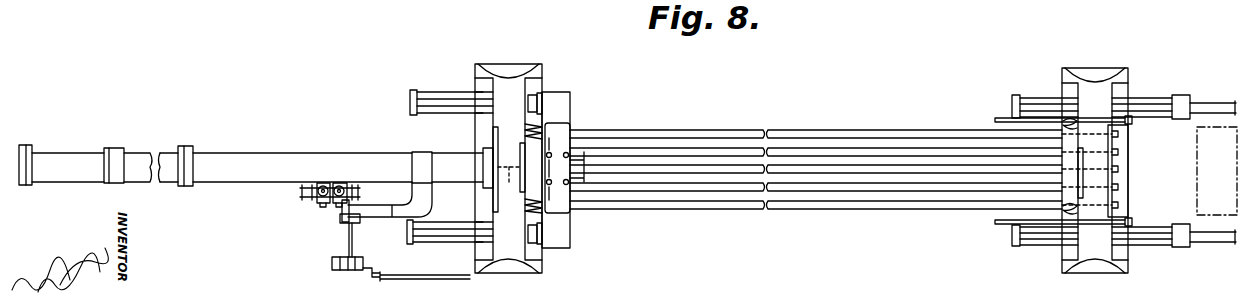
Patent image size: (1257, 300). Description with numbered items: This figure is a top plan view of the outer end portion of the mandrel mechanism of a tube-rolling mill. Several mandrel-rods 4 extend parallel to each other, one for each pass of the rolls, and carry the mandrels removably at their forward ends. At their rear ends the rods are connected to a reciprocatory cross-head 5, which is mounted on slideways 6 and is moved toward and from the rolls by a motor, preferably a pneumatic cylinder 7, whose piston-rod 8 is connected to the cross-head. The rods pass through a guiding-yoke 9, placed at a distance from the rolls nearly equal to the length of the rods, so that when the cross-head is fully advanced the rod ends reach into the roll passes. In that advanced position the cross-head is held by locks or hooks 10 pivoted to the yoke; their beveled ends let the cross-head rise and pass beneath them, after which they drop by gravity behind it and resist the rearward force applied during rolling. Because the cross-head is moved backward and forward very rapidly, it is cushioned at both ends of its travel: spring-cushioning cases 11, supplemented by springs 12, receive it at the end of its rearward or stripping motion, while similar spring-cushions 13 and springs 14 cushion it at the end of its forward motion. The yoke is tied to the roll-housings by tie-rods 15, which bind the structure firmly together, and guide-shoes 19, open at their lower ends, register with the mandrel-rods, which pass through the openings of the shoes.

The mandrel-rods 4 is at (695, 153).
The reciprocatory cross-head 5 is at (567, 97).
The slideways 6 is at (887, 178).
The pneumatic cylinder 7 is at (251, 165).
The piston-rod 8 is at (508, 168).
The guiding-yoke 9 is at (1095, 170).
The locks or hooks 10 is at (1002, 116).
The spring-cushioning cases 11 is at (445, 97).
The springs 12 is at (544, 124).
The spring-cushions 13 is at (1148, 100).
The springs 14 is at (1062, 130).
The tie-rods 15 is at (1205, 105).
The guide-shoes 19 is at (1200, 197).